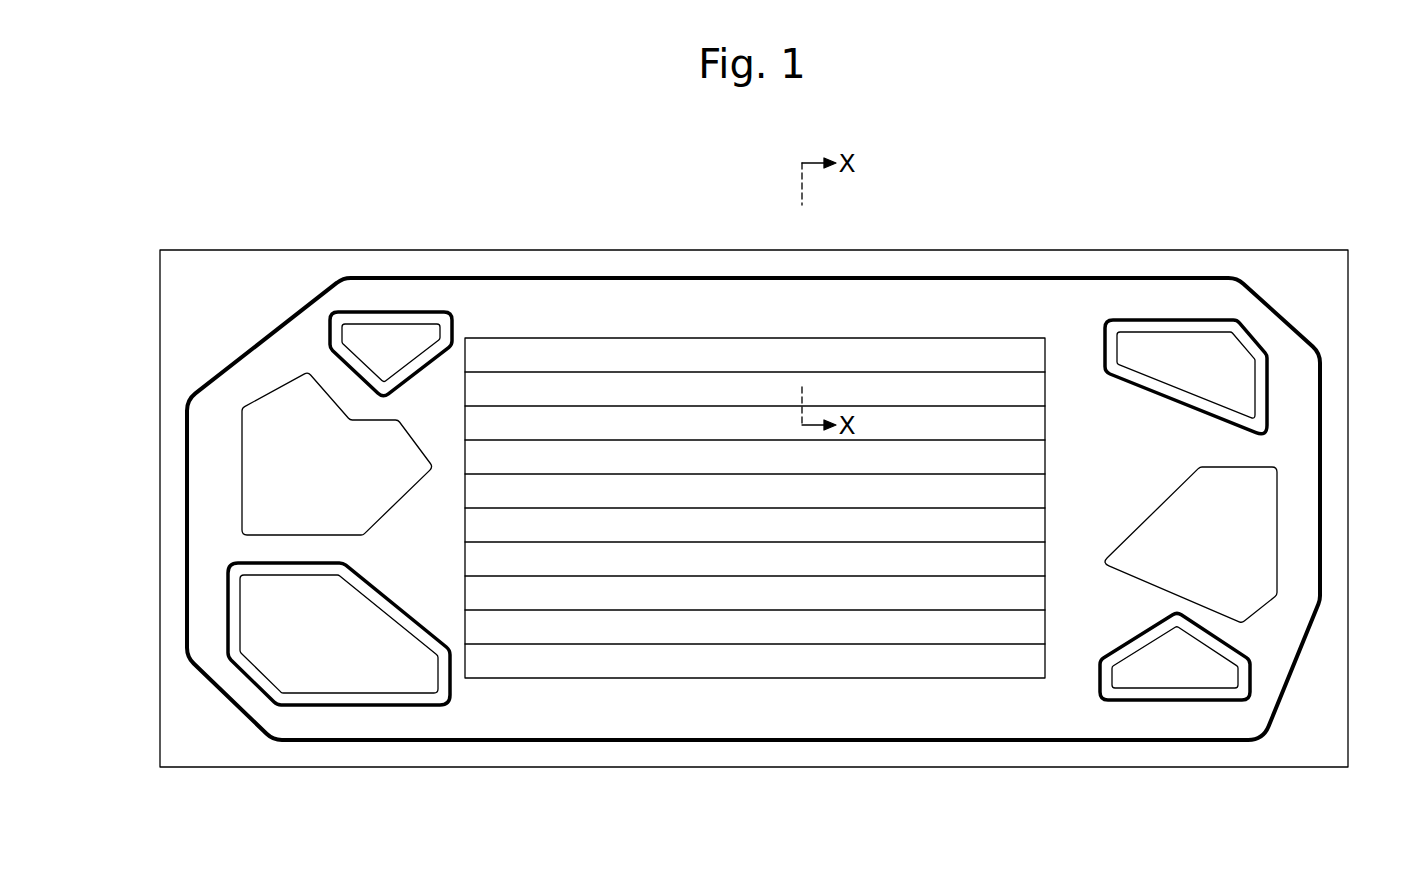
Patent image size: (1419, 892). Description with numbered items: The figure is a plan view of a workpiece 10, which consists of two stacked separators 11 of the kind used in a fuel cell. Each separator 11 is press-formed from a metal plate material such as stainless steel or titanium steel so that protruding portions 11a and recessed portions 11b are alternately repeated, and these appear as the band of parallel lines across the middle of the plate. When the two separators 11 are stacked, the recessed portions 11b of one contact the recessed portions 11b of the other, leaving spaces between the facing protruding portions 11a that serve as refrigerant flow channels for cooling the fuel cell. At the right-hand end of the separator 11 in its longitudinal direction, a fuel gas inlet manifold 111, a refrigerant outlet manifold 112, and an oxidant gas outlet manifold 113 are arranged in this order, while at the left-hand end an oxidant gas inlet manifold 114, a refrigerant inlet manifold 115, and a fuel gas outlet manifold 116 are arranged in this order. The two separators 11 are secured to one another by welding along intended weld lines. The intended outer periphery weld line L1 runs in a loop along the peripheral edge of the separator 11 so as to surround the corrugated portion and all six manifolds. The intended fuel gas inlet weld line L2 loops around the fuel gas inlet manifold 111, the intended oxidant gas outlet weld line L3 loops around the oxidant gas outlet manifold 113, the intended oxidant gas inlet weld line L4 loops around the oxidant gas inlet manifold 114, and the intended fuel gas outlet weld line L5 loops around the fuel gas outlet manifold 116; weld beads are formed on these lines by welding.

The workpiece 10 is at (754, 466).
The separator 11 is at (754, 466).
The protruding portion 11a is at (685, 322).
The recessed portion 11b is at (617, 358).
The fuel gas inlet manifold 111 is at (1254, 372).
The refrigerant outlet manifold 112 is at (1277, 554).
The oxidant gas outlet manifold 113 is at (1120, 657).
The oxidant gas inlet manifold 114 is at (360, 357).
The refrigerant inlet manifold 115 is at (243, 448).
The fuel gas outlet manifold 116 is at (437, 673).
The intended outer periphery weld line L1 is at (902, 278).
The intended fuel gas inlet weld line L2 is at (1153, 320).
The intended oxidant gas outlet weld line L3 is at (1208, 700).
The intended oxidant gas inlet weld line L4 is at (420, 308).
The intended fuel gas outlet weld line L5 is at (318, 707).